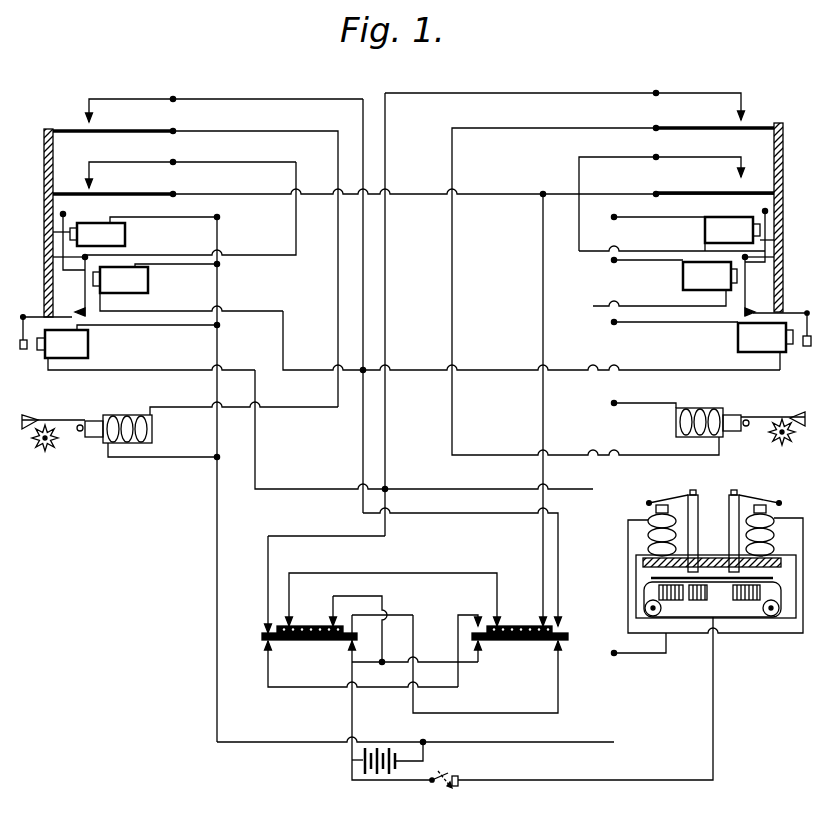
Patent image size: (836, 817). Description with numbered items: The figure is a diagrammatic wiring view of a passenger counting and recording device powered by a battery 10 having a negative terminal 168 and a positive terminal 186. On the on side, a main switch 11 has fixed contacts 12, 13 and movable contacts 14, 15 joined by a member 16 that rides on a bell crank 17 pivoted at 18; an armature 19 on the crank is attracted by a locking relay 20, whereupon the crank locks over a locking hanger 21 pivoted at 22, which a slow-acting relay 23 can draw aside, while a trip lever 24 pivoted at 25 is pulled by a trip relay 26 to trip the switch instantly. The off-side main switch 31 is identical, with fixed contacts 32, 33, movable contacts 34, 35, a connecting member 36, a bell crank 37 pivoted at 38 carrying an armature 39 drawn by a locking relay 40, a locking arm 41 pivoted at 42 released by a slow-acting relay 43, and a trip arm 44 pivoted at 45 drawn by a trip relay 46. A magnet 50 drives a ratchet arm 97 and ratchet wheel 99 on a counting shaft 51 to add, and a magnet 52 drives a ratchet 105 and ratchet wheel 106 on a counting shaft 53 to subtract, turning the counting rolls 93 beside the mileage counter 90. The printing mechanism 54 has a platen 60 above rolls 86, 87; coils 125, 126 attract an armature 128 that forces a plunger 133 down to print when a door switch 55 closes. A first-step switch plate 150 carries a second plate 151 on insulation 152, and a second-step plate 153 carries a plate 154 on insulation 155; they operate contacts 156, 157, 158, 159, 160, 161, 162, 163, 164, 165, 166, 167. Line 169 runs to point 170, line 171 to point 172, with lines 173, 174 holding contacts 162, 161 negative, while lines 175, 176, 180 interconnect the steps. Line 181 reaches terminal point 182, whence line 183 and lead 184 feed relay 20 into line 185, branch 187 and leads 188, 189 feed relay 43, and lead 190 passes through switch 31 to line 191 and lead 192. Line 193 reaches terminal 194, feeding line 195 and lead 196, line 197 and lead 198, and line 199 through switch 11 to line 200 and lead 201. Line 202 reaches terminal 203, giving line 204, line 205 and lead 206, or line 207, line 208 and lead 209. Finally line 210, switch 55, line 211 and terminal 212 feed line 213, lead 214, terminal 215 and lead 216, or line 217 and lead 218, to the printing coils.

The battery 10 is at (363, 763).
The locking or main switch 11 is at (777, 114).
The fixed contact 12 is at (712, 92).
The fixed contact 13 is at (717, 156).
The movable contact 14 is at (692, 128).
The movable contact 15 is at (693, 190).
The member 16 is at (784, 205).
The bell crank 17 is at (782, 310).
The pivot 18 is at (808, 328).
The armature 19 is at (806, 348).
The locking switch relay 20 is at (737, 352).
The locking hanger 21 is at (746, 305).
The pivot 22 is at (776, 257).
The slow-acting relay 23 is at (690, 284).
The trip lever 24 is at (775, 240).
The pivot 25 is at (764, 210).
The trip relay 26 is at (704, 238).
The locking or main switch 31 is at (66, 118).
The fixed contact 32 is at (120, 98).
The fixed contact 33 is at (120, 162).
The movable contact 34 is at (122, 131).
The movable contact 35 is at (120, 194).
The connecting member 36 is at (54, 152).
The bell crank 37 is at (46, 315).
The pivot 38 is at (38, 315).
The armature 39 is at (23, 350).
The locking relay 40 is at (75, 360).
The locking arm 41 is at (84, 300).
The pivot 42 is at (84, 258).
The slow-acting relay 43 is at (138, 294).
The trip arm 44 is at (62, 233).
The pivot 45 is at (66, 215).
The trip relay 46 is at (126, 243).
The magnet 50 is at (702, 408).
The counting shaft 51 is at (779, 445).
The magnet 52 is at (130, 414).
The counting shaft 53 is at (52, 448).
The printing mechanism 54 is at (750, 615).
The switch 55 is at (446, 772).
The platen 60 is at (650, 577).
The roll 86 is at (655, 618).
The roll 87 is at (775, 618).
The mileage counter 90 is at (665, 605).
The counting rolls 93 is at (710, 593).
The ratchet arm 97 is at (772, 414).
The ratchet wheel 99 is at (764, 428).
The ratchet 105 is at (82, 420).
The ratchet wheel 106 is at (42, 450).
The coil 125 is at (648, 522).
The coil 126 is at (776, 535).
The armature 128 is at (670, 498).
The plunger 133 is at (742, 545).
The movable switch plate 150 is at (262, 637).
The second plate 151 is at (300, 625).
The insulation 152 is at (322, 625).
The main switch plate 153 is at (569, 636).
The second plate 154 is at (500, 625).
The insulation 155 is at (530, 625).
The contact 156 is at (265, 648).
The contact 157 is at (348, 646).
The contact 158 is at (266, 622).
The contact 159 is at (354, 645).
The contact 160 is at (289, 615).
The contact 161 is at (338, 620).
The contact 162 is at (478, 660).
The contact 163 is at (562, 650).
The contact 164 is at (472, 627).
The contact 165 is at (562, 625).
The contact 166 is at (495, 618).
The contact 167 is at (547, 622).
The negative terminal 168 is at (351, 760).
The line 169 is at (350, 725).
The point 170 is at (350, 670).
The line 171 is at (382, 664).
The point 172 is at (384, 656).
The line 173 is at (424, 665).
The line 174 is at (386, 598).
The line 175 is at (285, 688).
The line 176 is at (492, 713).
The line 180 is at (390, 572).
The line 181 is at (560, 554).
The terminal point 182 is at (360, 375).
The line 183 is at (415, 372).
The lead 184 is at (640, 324).
The line 185 is at (616, 401).
The terminal 186 is at (425, 741).
The branch 187 is at (306, 369).
The lead 188 is at (218, 265).
The lead 189 is at (219, 290).
The lead 190 is at (362, 288).
The line 191 is at (325, 131).
The lead 192 is at (168, 458).
The line 193 is at (330, 535).
The terminal 194 is at (386, 488).
The line 195 is at (280, 488).
The lead 196 is at (158, 326).
The line 197 is at (478, 488).
The lead 198 is at (612, 262).
The line 199 is at (390, 330).
The line 200 is at (536, 128).
The lead 201 is at (610, 404).
The line 202 is at (543, 552).
The terminal 203 is at (543, 193).
The line 204 is at (602, 195).
The line 205 is at (600, 158).
The lead 206 is at (658, 216).
The line 207 is at (482, 193).
The line 208 is at (293, 160).
The lead 209 is at (219, 217).
The line 210 is at (360, 780).
The line 211 is at (558, 780).
The terminal 212 is at (724, 622).
The line 213 is at (786, 622).
The lead 214 is at (803, 518).
The terminal 215 is at (668, 640).
The lead 216 is at (640, 654).
The line 217 is at (694, 618).
The lead 218 is at (622, 658).